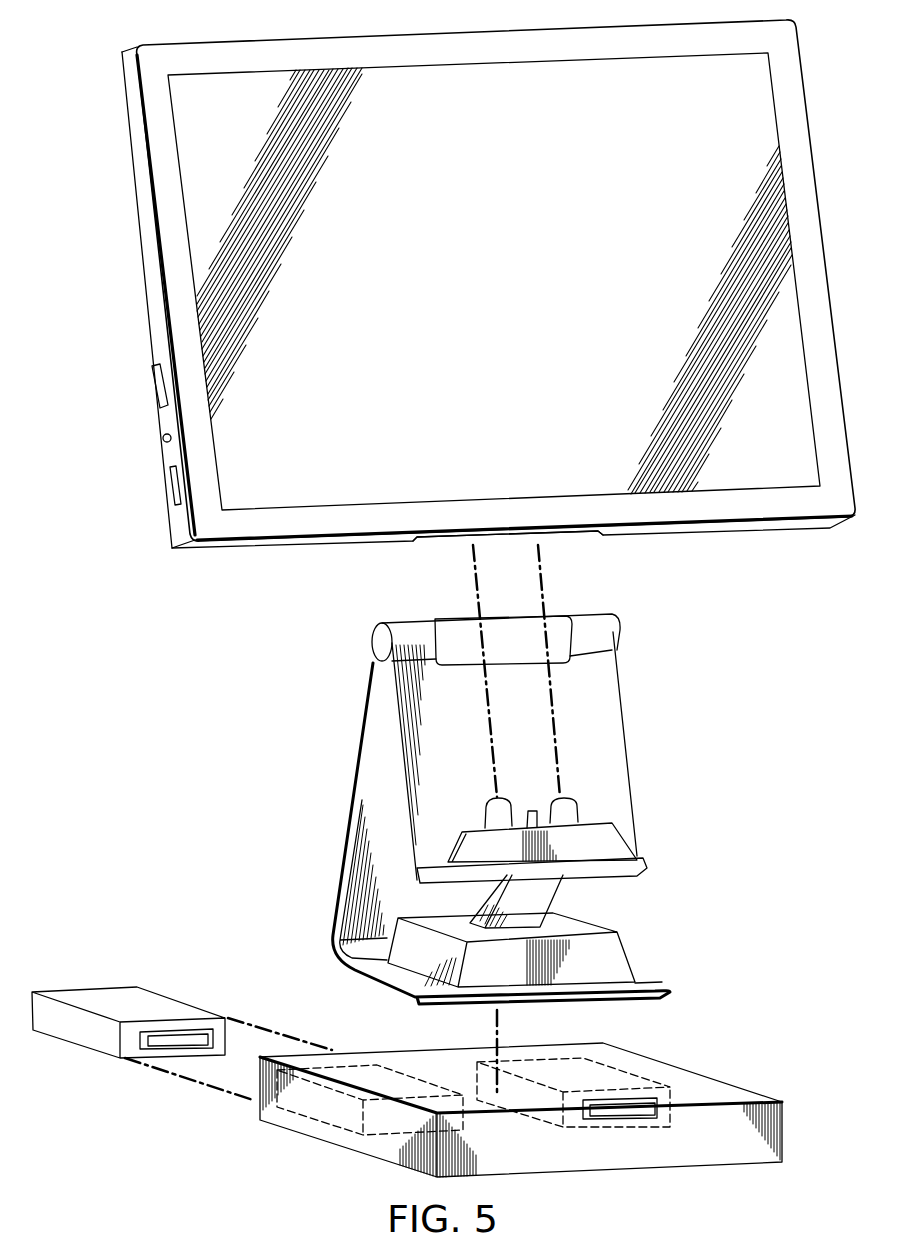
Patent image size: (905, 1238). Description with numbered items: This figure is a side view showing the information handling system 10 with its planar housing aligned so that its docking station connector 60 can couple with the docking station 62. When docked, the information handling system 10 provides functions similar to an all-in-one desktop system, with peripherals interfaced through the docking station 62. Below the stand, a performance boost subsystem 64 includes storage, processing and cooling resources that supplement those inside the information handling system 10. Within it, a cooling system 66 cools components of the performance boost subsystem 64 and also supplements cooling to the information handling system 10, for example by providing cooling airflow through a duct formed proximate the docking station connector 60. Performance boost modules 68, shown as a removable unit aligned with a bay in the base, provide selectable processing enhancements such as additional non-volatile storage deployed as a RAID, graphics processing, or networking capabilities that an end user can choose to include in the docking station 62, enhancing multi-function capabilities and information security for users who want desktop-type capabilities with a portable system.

The information handling system 10 is at (110, 288).
The docking station connector 60 is at (450, 542).
The docking station 62 is at (611, 713).
The performance boost subsystem 64 is at (805, 908).
The cooling system 66 is at (622, 946).
The performance boost modules 68 is at (297, 1124).